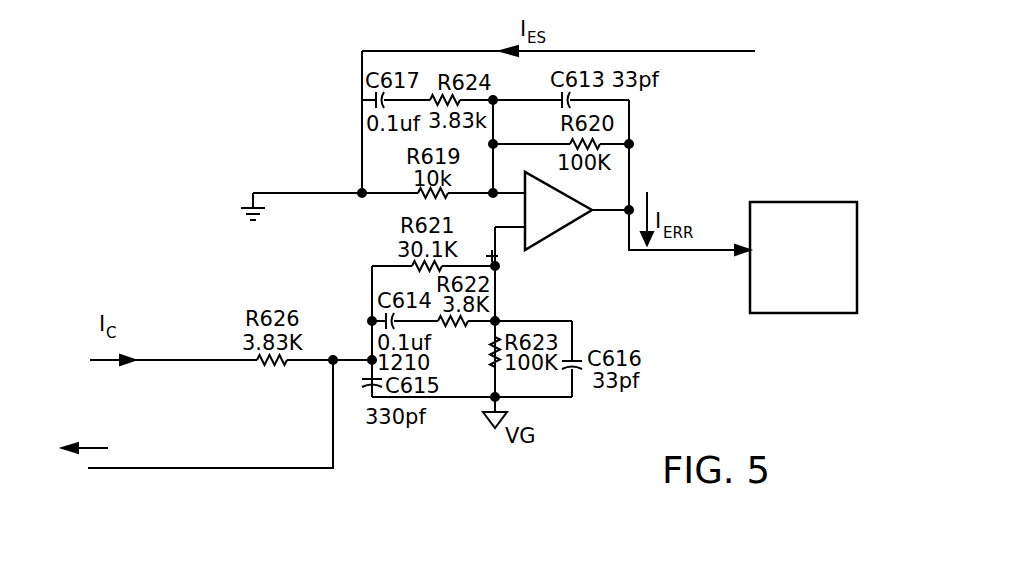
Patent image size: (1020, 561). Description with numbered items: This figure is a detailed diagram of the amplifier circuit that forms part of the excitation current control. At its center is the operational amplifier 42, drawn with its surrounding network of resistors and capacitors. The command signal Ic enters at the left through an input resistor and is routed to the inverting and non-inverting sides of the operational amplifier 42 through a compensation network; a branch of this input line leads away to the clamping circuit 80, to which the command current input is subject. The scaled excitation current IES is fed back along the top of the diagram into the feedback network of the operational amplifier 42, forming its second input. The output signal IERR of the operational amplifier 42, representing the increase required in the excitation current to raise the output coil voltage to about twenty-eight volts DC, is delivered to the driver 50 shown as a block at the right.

The operational amplifier 42 is at (555, 234).
The driver 50 is at (787, 202).
The clamping circuit 80 is at (197, 428).